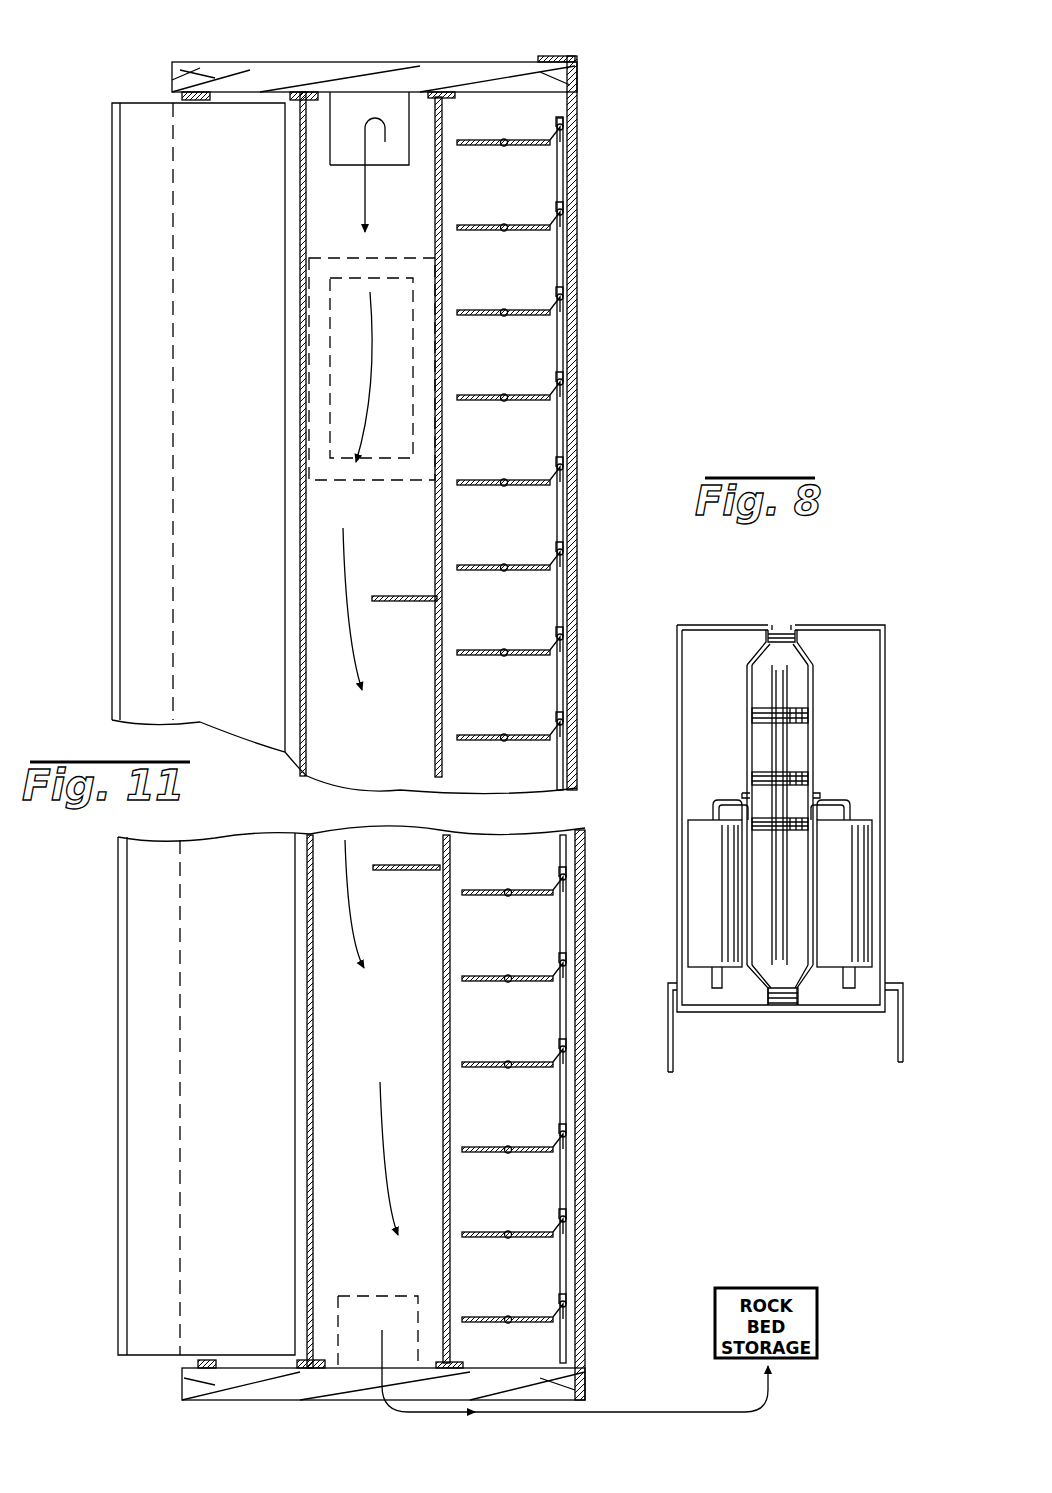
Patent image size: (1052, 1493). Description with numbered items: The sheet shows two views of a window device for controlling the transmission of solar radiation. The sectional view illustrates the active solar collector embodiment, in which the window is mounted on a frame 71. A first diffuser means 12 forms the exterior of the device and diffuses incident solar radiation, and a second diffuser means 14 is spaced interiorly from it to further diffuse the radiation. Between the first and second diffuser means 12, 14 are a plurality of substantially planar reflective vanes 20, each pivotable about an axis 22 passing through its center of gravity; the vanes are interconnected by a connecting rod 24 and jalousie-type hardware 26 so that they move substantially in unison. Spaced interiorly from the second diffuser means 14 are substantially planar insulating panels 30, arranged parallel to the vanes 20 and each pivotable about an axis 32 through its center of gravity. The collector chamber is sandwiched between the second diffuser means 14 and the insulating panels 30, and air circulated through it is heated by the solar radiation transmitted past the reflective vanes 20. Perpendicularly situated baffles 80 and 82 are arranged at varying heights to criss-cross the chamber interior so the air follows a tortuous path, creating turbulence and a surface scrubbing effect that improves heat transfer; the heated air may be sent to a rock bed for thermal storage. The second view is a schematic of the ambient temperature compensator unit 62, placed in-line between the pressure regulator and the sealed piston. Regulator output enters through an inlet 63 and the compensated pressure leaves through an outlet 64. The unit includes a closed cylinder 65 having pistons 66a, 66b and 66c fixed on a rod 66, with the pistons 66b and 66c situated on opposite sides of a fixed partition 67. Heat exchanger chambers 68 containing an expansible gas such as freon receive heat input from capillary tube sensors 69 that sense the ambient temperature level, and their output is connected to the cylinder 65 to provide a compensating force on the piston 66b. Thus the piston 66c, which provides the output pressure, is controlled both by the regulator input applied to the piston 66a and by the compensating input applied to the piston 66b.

In FIG. 11, the first diffuser means 12 is at (575, 190).
In FIG. 11, the second diffuser means 14 is at (445, 183).
In FIG. 11, the reflective vanes 20 is at (520, 232).
In FIG. 11, the axis 22 is at (508, 318).
In FIG. 11, the connecting rod 24 is at (562, 268).
In FIG. 11, the jalousie-type hardware 26 is at (562, 378).
In FIG. 11, the insulating panels 30 is at (130, 240).
In FIG. 11, the axis 32 is at (185, 98).
In FIG. 8, the compensator unit 62 is at (850, 618).
In FIG. 8, the inlet 63 is at (780, 630).
In FIG. 8, the outlet 64 is at (790, 1005).
In FIG. 8, the closed cylinder 65 is at (812, 748).
In FIG. 8, the rod 66 is at (778, 745).
In FIG. 8, the piston 66a is at (757, 712).
In FIG. 8, the piston 66b is at (760, 780).
In FIG. 8, the piston 66c is at (760, 862).
In FIG. 8, the fixed partition 67 is at (800, 825).
In FIG. 8, the heat exchanger chambers 68 is at (704, 918).
In FIG. 8, the capillary tube sensors 69 is at (668, 1030).
In FIG. 11, the frame 71 is at (560, 80).
In FIG. 11, the baffles 80 is at (405, 595).
In FIG. 11, the baffles 82 is at (315, 130).